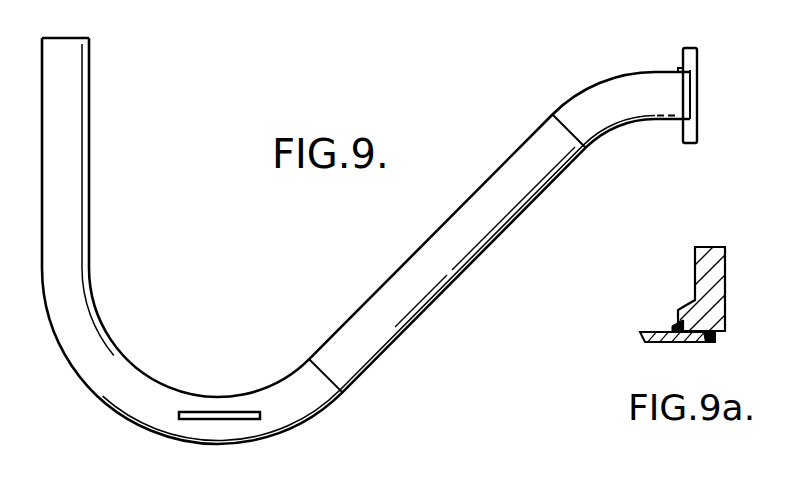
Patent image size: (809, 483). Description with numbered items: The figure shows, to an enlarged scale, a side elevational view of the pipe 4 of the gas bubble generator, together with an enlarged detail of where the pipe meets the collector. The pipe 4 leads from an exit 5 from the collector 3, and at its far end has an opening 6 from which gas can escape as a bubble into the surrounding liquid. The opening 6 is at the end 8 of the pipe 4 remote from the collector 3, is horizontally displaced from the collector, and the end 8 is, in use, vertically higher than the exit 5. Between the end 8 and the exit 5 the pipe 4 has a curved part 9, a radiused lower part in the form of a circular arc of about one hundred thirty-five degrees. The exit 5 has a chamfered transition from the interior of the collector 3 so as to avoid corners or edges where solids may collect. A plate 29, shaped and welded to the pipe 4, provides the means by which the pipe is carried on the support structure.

In FIG. 9, the collector 3 is at (698, 53).
In FIG. 9A, the collector 3 is at (718, 290).
In FIG. 9, the pipe 4 is at (390, 276).
In FIG. 9A, the pipe 4 is at (657, 344).
In FIG. 9, the exit 5 is at (677, 67).
In FIG. 9A, the exit 5 is at (666, 318).
In FIG. 9, the opening 6 is at (79, 38).
In FIG. 9, the end of the pipe 8 is at (93, 57).
In FIG. 9, the curved part 9 is at (205, 394).
In FIG. 9, the plate 29 is at (245, 421).